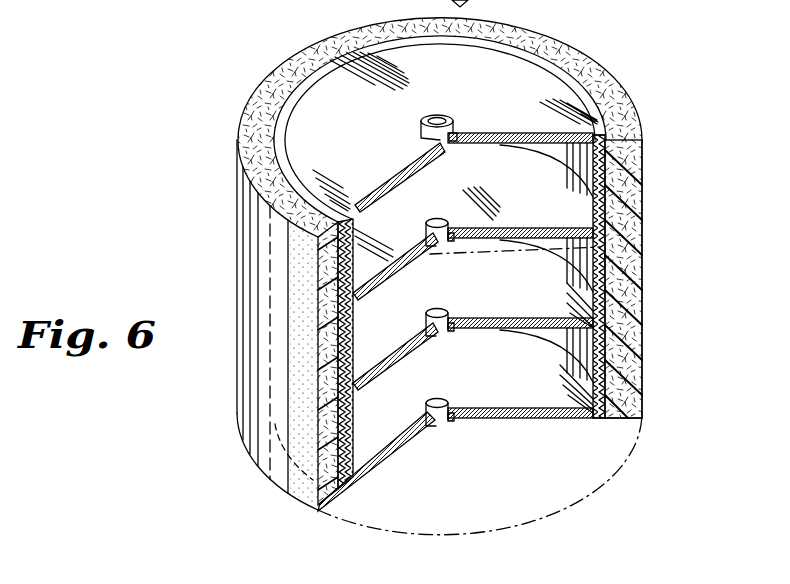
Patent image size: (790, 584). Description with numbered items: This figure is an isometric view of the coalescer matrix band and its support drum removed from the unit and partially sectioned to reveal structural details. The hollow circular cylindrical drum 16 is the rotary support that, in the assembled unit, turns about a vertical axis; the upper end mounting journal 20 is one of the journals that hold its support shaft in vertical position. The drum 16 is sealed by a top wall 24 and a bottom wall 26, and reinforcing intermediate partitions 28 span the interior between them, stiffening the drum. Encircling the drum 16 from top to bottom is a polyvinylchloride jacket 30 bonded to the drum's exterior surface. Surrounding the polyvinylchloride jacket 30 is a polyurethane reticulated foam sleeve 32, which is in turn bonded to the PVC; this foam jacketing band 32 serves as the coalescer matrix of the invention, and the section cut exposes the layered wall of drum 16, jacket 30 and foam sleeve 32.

The drum 16 is at (238, 93).
The upper end mounting journal 20 is at (455, 121).
The top wall 24 is at (548, 88).
The bottom wall 26 is at (555, 420).
The reinforcing intermediate partitions 28 is at (480, 217).
The polyvinylchloride jacket 30 is at (364, 47).
The polyurethane reticulated foam sleeve 32 is at (312, 50).